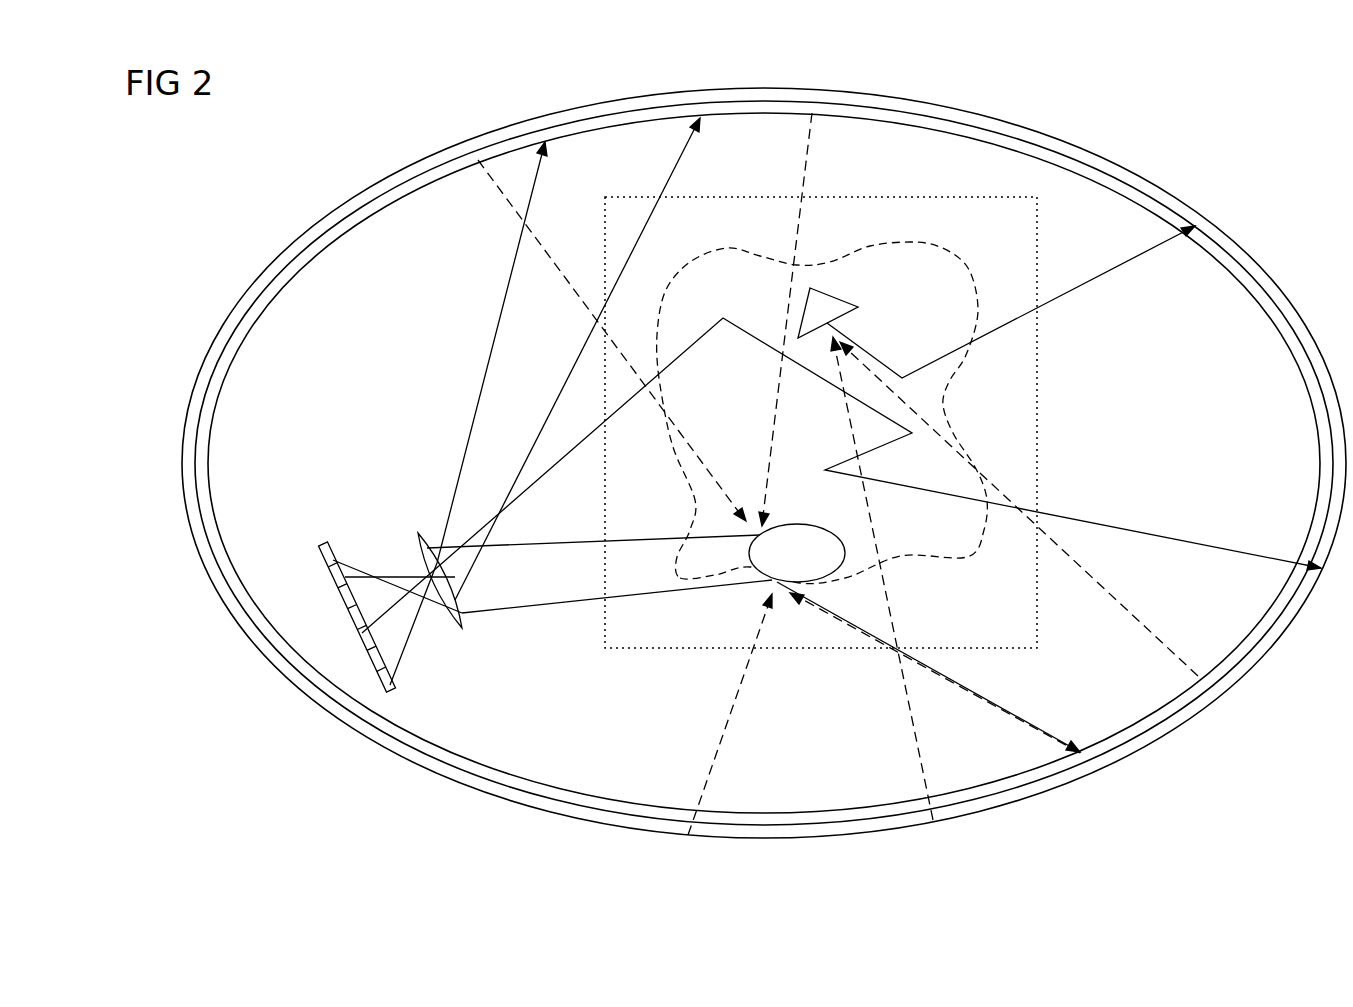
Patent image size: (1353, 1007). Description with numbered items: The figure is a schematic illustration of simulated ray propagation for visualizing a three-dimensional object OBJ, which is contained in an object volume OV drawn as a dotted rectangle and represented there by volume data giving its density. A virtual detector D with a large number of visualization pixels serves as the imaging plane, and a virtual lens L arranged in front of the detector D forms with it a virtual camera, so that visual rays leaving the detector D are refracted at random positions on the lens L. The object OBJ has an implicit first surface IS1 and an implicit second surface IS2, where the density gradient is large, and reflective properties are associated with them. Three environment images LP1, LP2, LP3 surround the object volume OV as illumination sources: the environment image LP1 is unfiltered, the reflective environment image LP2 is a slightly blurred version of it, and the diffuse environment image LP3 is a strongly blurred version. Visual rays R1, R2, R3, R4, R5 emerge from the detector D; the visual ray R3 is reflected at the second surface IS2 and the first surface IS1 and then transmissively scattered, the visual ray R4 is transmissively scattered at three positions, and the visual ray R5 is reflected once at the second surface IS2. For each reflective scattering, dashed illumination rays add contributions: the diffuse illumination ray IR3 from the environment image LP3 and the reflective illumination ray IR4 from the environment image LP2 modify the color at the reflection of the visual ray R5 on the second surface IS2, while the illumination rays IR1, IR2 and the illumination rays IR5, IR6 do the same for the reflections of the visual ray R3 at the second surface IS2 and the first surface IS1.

The environment image LP1 is at (1000, 149).
The reflective environment image LP2 is at (1068, 161).
The diffuse environment image LP3 is at (1130, 172).
The object volume OV is at (650, 650).
The object OBJ is at (940, 560).
The virtual detector D is at (323, 542).
The virtual lens L is at (458, 632).
The implicit first surface IS1 is at (840, 292).
The implicit second surface IS2 is at (797, 553).
The visual ray R1 is at (508, 302).
The visual ray R2 is at (693, 142).
The visual ray R3 is at (1100, 278).
The visual ray R4 is at (1152, 536).
The visual ray R5 is at (1015, 718).
The illumination ray IR1 is at (497, 183).
The illumination ray IR2 is at (810, 150).
The diffuse illumination ray IR3 is at (720, 745).
The reflective illumination ray IR4 is at (985, 705).
The illumination ray IR5 is at (920, 760).
The illumination ray IR6 is at (1148, 630).